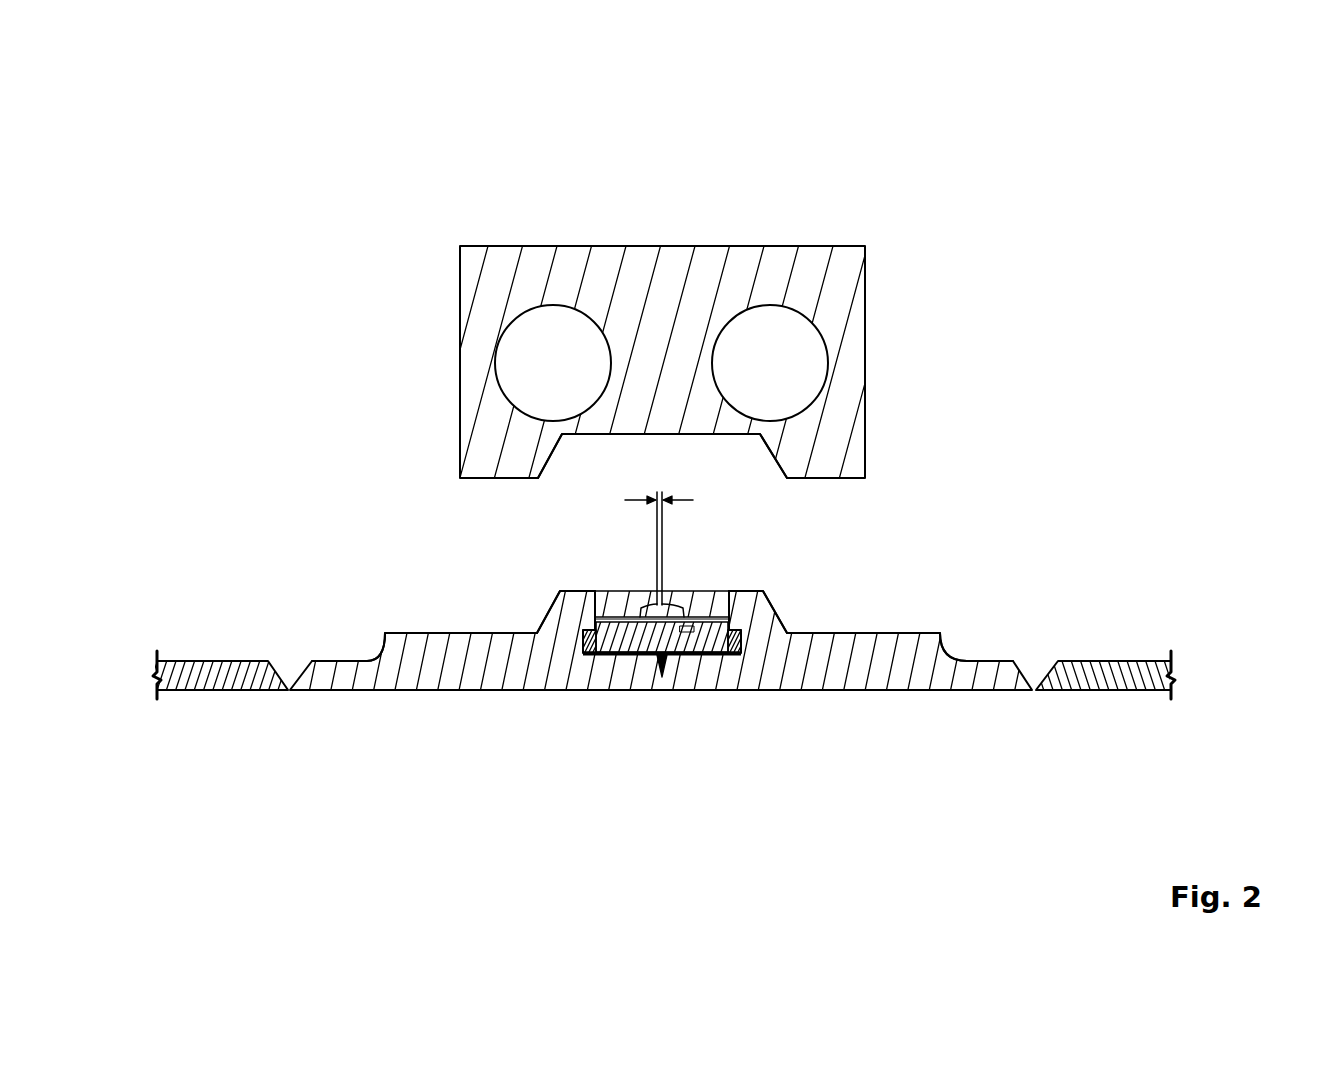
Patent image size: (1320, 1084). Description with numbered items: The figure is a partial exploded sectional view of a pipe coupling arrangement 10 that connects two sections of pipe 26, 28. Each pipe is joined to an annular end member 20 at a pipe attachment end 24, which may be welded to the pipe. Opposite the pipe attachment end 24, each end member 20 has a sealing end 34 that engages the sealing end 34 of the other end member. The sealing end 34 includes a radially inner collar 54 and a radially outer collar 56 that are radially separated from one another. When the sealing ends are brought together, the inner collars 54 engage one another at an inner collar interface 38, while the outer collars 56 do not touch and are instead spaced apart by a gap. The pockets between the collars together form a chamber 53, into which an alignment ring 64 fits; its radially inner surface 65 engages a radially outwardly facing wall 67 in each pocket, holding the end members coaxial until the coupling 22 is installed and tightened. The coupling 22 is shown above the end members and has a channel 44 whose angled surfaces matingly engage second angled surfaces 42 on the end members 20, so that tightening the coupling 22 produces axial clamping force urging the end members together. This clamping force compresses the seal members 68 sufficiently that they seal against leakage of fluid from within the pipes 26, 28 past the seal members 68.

The pipe coupling arrangement 10 is at (1032, 133).
The end member 20 is at (362, 683).
The coupling 22 is at (856, 322).
The pipe attachment end 24 is at (335, 662).
The pipe 26 is at (222, 683).
The pipe 28 is at (1128, 687).
The sealing end 34 is at (607, 677).
The inner collar interface 38 is at (663, 676).
The second angled surface 42 is at (547, 617).
The channel 44 is at (685, 434).
The chamber 53 is at (652, 610).
The radially inner collar 54 is at (615, 682).
The radially outer collar 56 is at (597, 597).
The alignment ring 64 is at (688, 628).
The radially inner surface 65 is at (633, 655).
The radially outwardly facing wall 67 is at (617, 626).
The seal member 68 is at (592, 653).